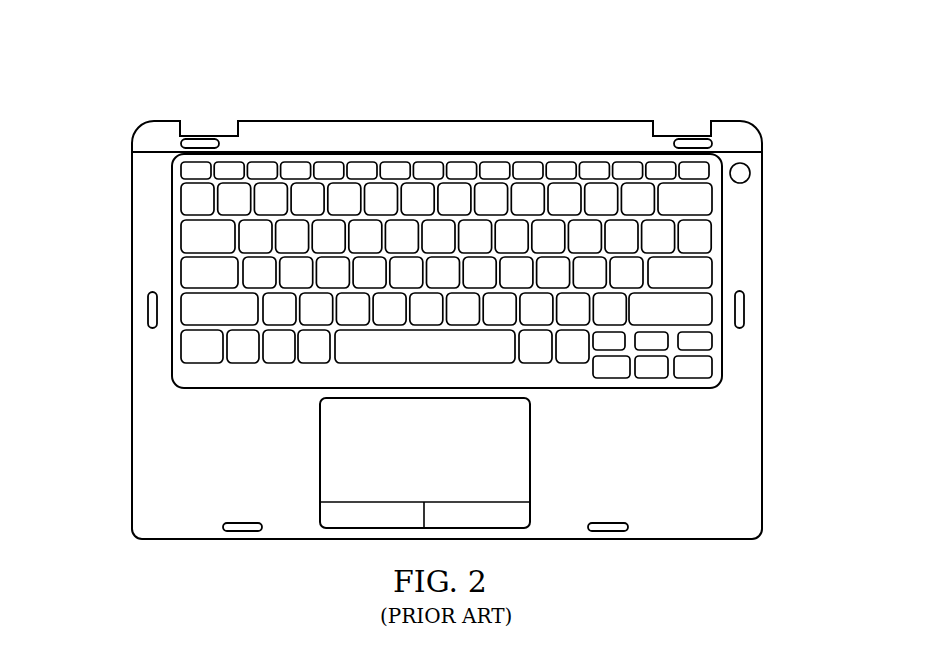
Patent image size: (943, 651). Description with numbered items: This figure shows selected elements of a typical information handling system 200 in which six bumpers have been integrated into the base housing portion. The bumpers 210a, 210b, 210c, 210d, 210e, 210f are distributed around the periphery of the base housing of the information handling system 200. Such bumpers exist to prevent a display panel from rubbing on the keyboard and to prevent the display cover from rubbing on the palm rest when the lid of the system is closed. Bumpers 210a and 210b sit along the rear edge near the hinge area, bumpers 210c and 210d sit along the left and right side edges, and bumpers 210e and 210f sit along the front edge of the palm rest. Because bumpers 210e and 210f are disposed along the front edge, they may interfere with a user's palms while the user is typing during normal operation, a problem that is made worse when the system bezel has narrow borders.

The information handling system 200 is at (466, 101).
The bumper 210a is at (200, 137).
The bumper 210b is at (692, 137).
The bumper 210c is at (147, 312).
The bumper 210d is at (746, 310).
The bumper 210e is at (237, 531).
The bumper 210f is at (612, 531).